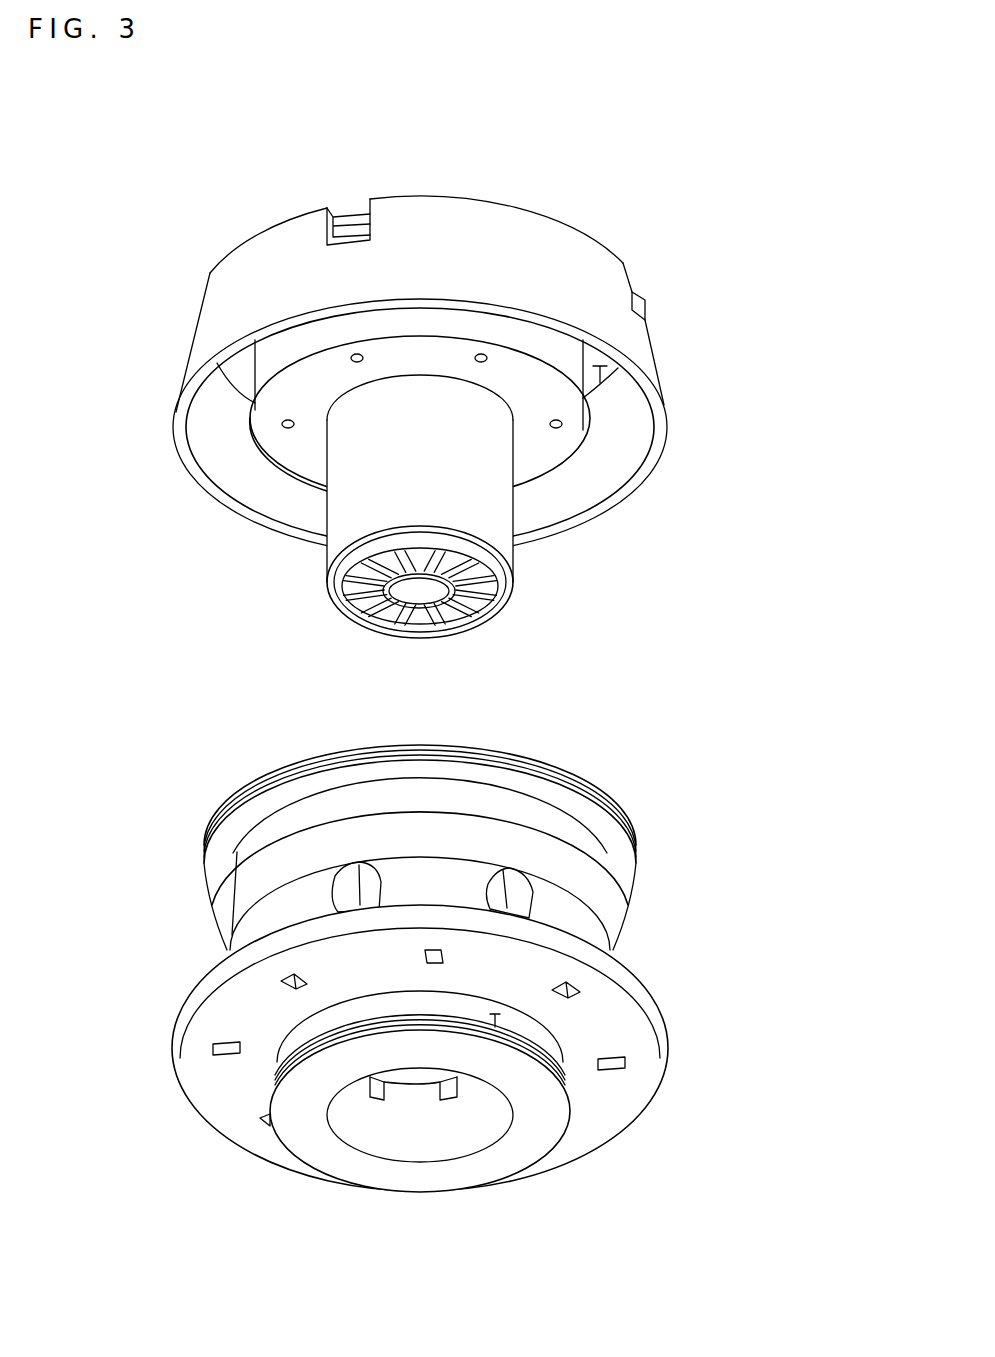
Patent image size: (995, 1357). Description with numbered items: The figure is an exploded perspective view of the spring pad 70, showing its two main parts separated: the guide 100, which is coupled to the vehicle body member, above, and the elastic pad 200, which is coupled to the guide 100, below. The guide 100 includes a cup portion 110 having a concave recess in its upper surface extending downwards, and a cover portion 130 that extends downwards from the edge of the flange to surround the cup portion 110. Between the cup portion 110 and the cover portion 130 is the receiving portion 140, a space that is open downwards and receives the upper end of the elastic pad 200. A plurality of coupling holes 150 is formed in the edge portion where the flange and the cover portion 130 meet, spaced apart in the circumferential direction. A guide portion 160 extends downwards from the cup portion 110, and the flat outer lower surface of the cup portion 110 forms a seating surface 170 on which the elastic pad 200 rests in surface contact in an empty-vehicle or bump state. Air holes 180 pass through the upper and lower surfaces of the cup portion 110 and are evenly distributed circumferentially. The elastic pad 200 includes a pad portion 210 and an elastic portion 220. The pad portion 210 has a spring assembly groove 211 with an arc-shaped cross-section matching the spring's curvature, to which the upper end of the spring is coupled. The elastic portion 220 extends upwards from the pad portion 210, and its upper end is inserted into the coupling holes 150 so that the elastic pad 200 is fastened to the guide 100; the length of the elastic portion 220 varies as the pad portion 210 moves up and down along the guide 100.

The spring pad 70 is at (642, 232).
The guide 100 is at (154, 321).
The cup portion 110 is at (463, 327).
The cover portion 130 is at (247, 260).
The receiving portion 140 is at (600, 383).
The coupling holes 150 is at (352, 228).
The guide portion 160 is at (457, 497).
The seating surface 170 is at (297, 457).
The air holes 180 is at (289, 429).
The elastic pad 200 is at (164, 1018).
The pad portion 210 is at (293, 1127).
The spring assembly groove 211 is at (498, 1024).
The elastic portion 220 is at (245, 885).